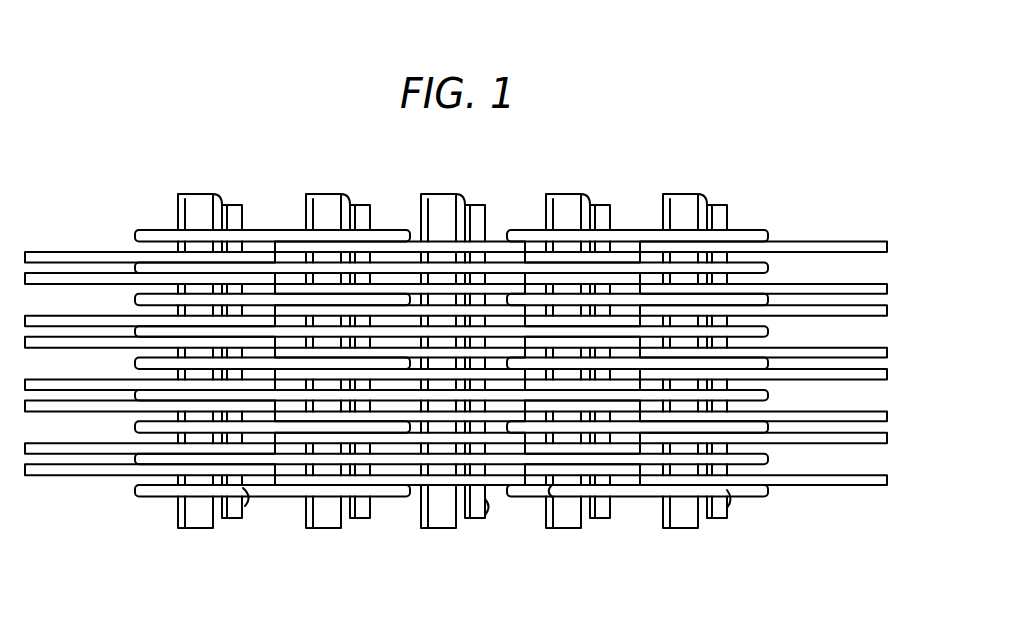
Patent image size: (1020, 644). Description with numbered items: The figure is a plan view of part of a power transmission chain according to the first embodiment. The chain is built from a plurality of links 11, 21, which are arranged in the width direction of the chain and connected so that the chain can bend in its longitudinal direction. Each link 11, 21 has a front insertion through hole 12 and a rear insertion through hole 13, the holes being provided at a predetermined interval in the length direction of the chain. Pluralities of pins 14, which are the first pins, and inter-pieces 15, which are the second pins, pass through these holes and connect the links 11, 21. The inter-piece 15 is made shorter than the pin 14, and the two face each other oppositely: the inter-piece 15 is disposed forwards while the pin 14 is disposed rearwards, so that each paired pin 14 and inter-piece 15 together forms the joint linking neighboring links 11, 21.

The link 11 is at (444, 478).
The front insertion through hole 12 is at (483, 515).
The rear insertion through hole 13 is at (250, 498).
The pin 14 is at (204, 508).
The inter-piece 15 is at (235, 507).
The link 21 is at (158, 497).